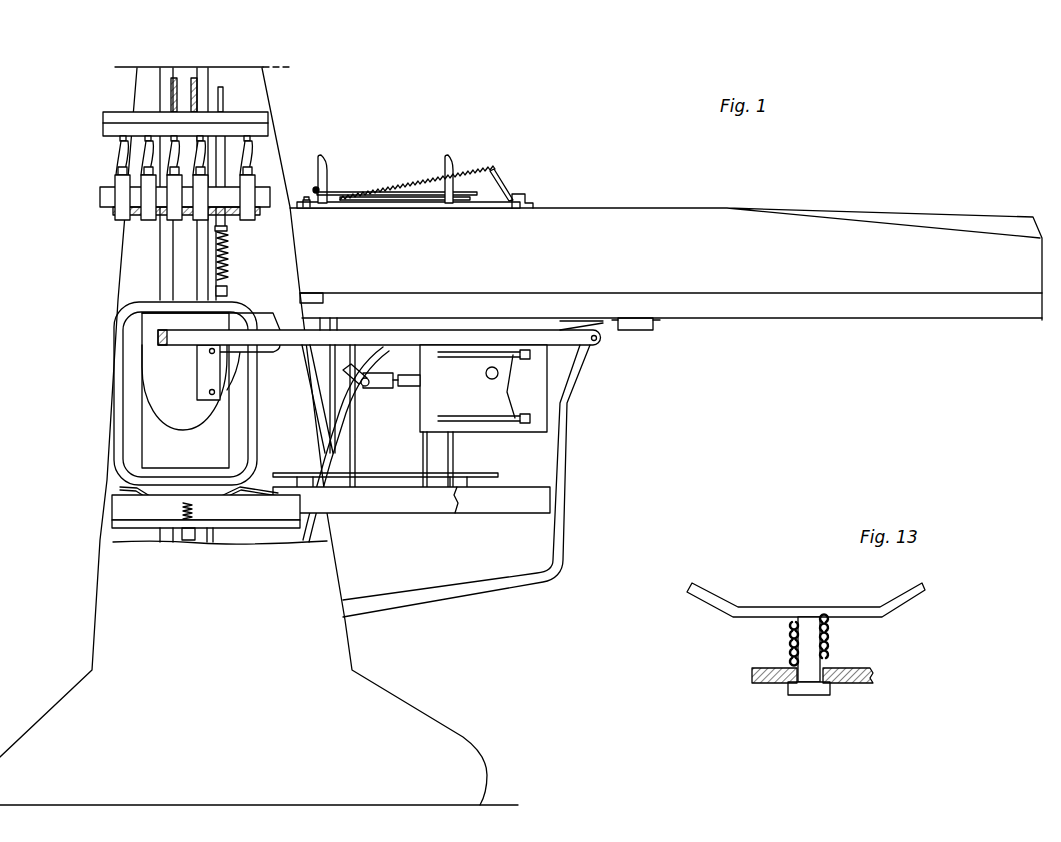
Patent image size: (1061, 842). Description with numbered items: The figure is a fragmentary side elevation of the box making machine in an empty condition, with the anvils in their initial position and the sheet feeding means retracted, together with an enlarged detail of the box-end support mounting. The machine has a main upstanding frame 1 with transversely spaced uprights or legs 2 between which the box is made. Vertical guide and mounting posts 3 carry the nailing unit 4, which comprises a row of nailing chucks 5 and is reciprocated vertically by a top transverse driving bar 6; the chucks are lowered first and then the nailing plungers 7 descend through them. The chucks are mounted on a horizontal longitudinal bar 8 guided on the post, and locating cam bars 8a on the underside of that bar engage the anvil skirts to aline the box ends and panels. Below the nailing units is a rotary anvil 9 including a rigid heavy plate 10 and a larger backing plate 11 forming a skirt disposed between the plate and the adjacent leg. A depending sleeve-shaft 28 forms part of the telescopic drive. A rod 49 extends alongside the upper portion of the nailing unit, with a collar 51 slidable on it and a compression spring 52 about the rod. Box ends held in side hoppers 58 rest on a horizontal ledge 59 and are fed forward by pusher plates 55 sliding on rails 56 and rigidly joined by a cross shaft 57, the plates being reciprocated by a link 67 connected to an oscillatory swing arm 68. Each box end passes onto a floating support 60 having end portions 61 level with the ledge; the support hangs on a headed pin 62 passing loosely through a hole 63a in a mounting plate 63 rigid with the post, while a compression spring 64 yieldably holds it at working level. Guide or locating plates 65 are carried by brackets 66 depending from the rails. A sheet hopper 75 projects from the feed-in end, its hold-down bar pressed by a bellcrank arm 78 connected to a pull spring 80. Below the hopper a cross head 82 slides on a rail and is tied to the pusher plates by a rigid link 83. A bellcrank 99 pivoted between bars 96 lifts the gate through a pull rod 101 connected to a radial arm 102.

In FIG. 1, the main upstanding frame 1 is at (118, 282).
In FIG. 1, the uprights or legs 2 is at (107, 537).
In FIG. 1, the vertical guide and mounting posts 3 is at (200, 241).
In FIG. 1, the nailing unit 4 is at (113, 165).
In FIG. 1, the nailing chucks 5 is at (152, 211).
In FIG. 1, the top transverse driving bar 6 is at (192, 105).
In FIG. 1, the nailing plungers 7 is at (250, 155).
In FIG. 1, the horizontal longitudinal bar 8 is at (102, 198).
In FIG. 1, the locating cam bars 8a is at (230, 215).
In FIG. 1, the rotary anvil 9 is at (112, 351).
In FIG. 1, the rigid heavy plate 10 is at (150, 440).
In FIG. 1, the backing plate 11 is at (123, 400).
In FIG. 1, the depending sleeve-shaft 28 is at (188, 542).
In FIG. 1, the rod 49 is at (222, 102).
In FIG. 1, the collar 51 is at (228, 228).
In FIG. 1, the compression spring 52 is at (230, 262).
In FIG. 1, the pusher plates 55 is at (540, 400).
In FIG. 1, the rails 56 is at (290, 325).
In FIG. 1, the cross shaft 57 is at (485, 374).
In FIG. 1, the side hoppers 58 is at (445, 465).
In FIG. 1, the horizontal ledge 59 is at (400, 490).
In FIG. 1, the floating support 60 is at (170, 500).
In FIG. 13, the floating support 60 is at (786, 612).
In FIG. 1, the end portions 61 is at (133, 485).
In FIG. 1, the headed pin 62 is at (197, 517).
In FIG. 13, the headed pin 62 is at (812, 653).
In FIG. 1, the mounting plate 63 is at (240, 526).
In FIG. 13, the mounting plate 63 is at (763, 684).
In FIG. 13, the hole 63a is at (845, 684).
In FIG. 13, the compression spring 64 is at (788, 642).
In FIG. 1, the guide or locating plates 65 is at (178, 417).
In FIG. 1, the brackets 66 is at (203, 372).
In FIG. 1, the link 67 is at (410, 387).
In FIG. 1, the oscillatory swing arm 68 is at (336, 448).
In FIG. 1, the sheet hopper 75 is at (635, 222).
In FIG. 1, the bellcrank arm 78 is at (500, 190).
In FIG. 1, the pull spring 80 is at (405, 185).
In FIG. 1, the cross head 82 is at (634, 331).
In FIG. 1, the rigid link 83 is at (562, 322).
In FIG. 1, the bars 96 is at (347, 210).
In FIG. 1, the bellcrank 99 is at (328, 188).
In FIG. 1, the pull rod 101 is at (470, 198).
In FIG. 1, the radial arm 102 is at (530, 197).